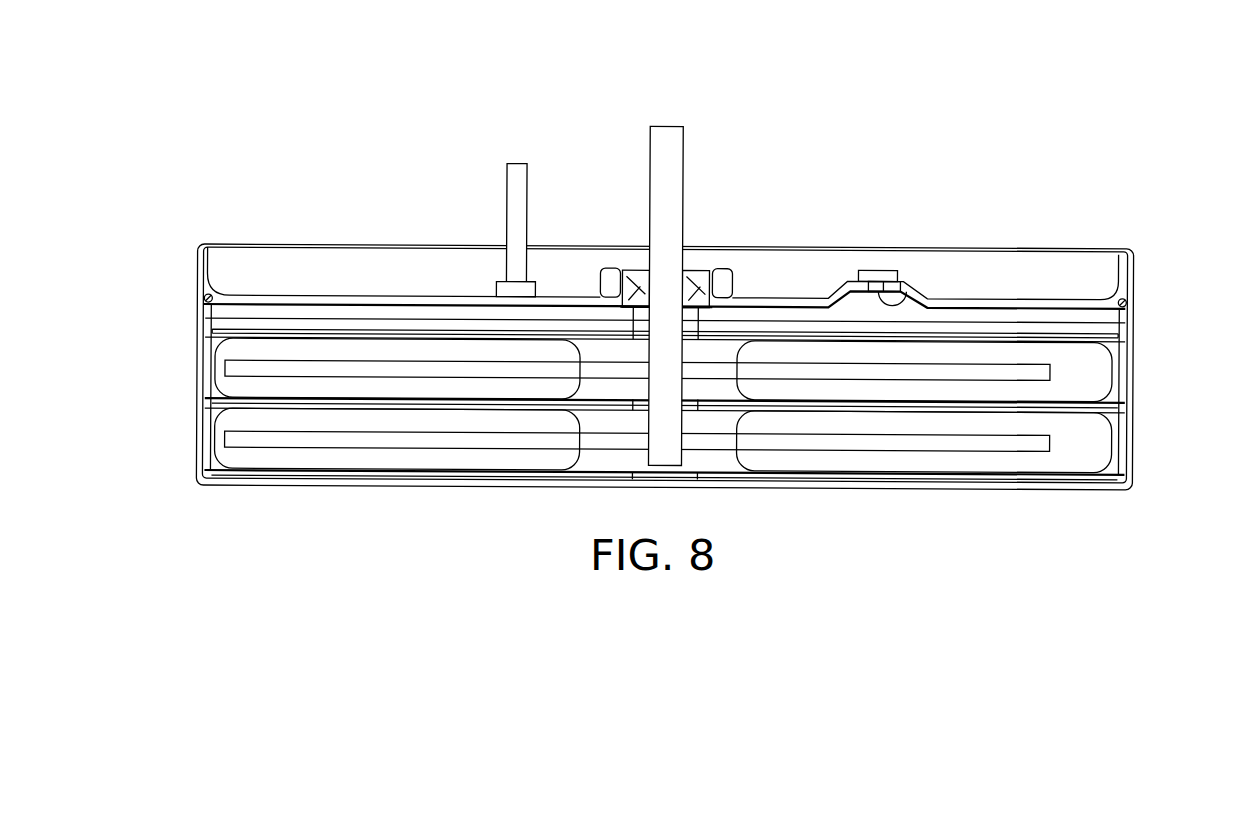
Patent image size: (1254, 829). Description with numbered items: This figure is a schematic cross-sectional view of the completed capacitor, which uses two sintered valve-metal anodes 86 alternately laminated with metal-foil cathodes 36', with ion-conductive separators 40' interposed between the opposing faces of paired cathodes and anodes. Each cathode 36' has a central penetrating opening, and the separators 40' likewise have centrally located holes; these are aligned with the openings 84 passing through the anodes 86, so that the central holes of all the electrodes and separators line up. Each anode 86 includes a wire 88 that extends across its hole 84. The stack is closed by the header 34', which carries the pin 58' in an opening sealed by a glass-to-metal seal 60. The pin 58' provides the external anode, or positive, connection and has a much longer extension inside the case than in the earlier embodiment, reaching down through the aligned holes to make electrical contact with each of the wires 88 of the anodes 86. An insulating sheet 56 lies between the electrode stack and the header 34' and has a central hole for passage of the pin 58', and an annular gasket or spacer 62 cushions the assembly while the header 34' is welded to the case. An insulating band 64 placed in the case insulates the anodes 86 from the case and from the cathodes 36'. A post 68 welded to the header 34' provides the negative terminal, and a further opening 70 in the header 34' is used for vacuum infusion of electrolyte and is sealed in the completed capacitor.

The header 34' is at (664, 327).
The cathodes 36' is at (629, 345).
The separators 40' is at (680, 398).
The insulating sheet 56 is at (1120, 318).
The pin 58' is at (702, 256).
The glass-to-metal seal 60 is at (693, 267).
The annular gasket or spacer 62 is at (1128, 305).
The insulating band 64 is at (1125, 387).
The post 68 is at (515, 180).
The opening 70 is at (902, 295).
The openings 84 is at (742, 365).
The anodes 86 is at (1093, 390).
The wires 88 is at (943, 372).